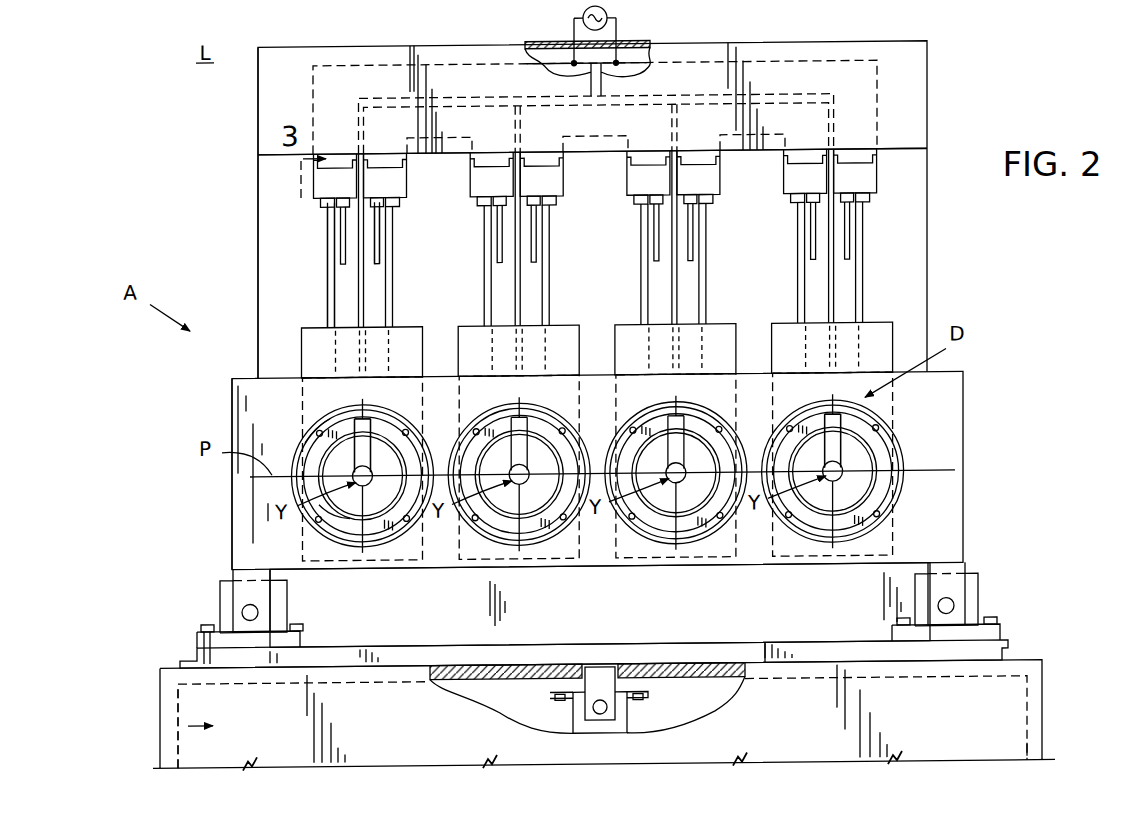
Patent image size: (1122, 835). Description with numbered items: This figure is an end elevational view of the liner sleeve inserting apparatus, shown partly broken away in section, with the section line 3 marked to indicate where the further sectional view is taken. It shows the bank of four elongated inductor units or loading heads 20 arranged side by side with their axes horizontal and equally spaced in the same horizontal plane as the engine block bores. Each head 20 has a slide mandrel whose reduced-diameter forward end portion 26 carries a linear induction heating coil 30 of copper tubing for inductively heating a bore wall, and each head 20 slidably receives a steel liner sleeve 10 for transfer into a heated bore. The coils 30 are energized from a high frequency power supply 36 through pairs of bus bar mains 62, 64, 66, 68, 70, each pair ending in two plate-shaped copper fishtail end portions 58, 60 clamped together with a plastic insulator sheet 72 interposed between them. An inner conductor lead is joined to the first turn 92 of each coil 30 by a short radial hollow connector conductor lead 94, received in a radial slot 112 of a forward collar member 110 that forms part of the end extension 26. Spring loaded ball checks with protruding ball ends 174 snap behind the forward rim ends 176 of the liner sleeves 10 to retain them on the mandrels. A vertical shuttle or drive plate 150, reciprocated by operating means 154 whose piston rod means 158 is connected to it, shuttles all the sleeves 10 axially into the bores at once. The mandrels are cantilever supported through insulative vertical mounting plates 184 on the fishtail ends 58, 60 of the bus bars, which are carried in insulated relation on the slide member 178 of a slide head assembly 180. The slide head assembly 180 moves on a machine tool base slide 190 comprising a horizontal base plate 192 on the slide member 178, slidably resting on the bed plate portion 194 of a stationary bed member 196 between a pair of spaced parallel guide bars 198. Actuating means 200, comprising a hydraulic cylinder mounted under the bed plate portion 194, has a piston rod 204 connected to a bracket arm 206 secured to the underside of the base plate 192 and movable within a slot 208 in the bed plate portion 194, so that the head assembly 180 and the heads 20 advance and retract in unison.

The liner sleeve 10 is at (402, 390).
The inductor unit 20 is at (378, 535).
The forward end portion 26 is at (344, 508).
The linear induction heating coil 30 is at (418, 447).
The high frequency power supply 36 is at (608, 17).
The fishtail end portion 58 is at (350, 274).
The fishtail end portion 60 is at (377, 278).
The bus bar main 62 is at (557, 68).
The bus bar main 64 is at (470, 157).
The bus bar main 66 is at (628, 157).
The bus bar main 68 is at (785, 157).
The bus bar main 70 is at (632, 66).
The plastic insulator sheet 72 is at (358, 281).
The first turn 92 is at (322, 390).
The connector conductor lead 94 is at (357, 449).
The forward collar member 110 is at (384, 507).
The radial slot 112 is at (834, 449).
The shuttle plate 150 is at (230, 508).
The operating means 154 is at (218, 600).
The piston rod means 158 is at (259, 610).
The ball ends 174 is at (320, 433).
The forward rim ends 176 is at (864, 488).
The slide member 178 is at (262, 204).
The slide head assembly 180 is at (235, 169).
The vertical mounting plate 184 is at (468, 339).
The machine tool base slide 190 is at (186, 641).
The base plate 192 is at (803, 653).
The bed plate portion 194 is at (487, 665).
The bed member 196 is at (166, 706).
The guide bars 198 is at (176, 665).
The actuating means 200 is at (634, 733).
The piston rod 204 is at (583, 717).
The bracket arm 206 is at (613, 695).
The slot 208 is at (605, 665).
The section line 3- 3 is at (207, 726).